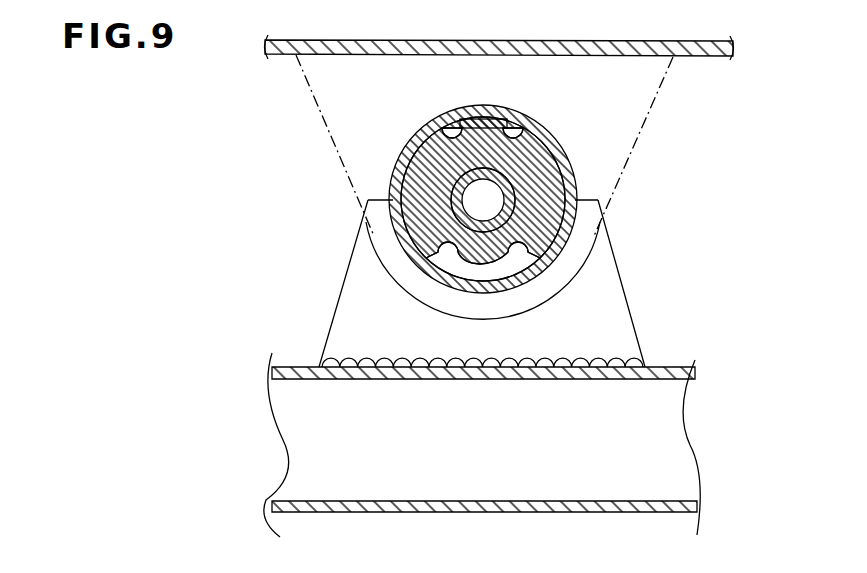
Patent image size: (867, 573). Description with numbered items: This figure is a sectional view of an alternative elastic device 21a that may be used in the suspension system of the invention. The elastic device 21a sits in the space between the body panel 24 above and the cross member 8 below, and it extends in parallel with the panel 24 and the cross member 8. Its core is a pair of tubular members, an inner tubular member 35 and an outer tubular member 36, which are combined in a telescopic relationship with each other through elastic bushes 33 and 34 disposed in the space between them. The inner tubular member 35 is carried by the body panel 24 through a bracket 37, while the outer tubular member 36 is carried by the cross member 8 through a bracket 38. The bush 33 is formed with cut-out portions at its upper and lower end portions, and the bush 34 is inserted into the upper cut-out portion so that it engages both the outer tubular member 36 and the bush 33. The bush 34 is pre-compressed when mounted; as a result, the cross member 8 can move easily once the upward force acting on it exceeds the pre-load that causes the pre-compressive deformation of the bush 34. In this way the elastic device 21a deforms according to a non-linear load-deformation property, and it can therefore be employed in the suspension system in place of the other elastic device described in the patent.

The body panel 24 is at (326, 41).
The elastic bush 34 is at (481, 112).
The elastic bush 33 is at (545, 150).
The outer tubular member 36 is at (574, 197).
The bracket 37 is at (342, 173).
The inner tubular member 35 is at (458, 201).
The elastic device 21a is at (583, 233).
The bracket 38 is at (617, 293).
The cross member 8 is at (365, 500).